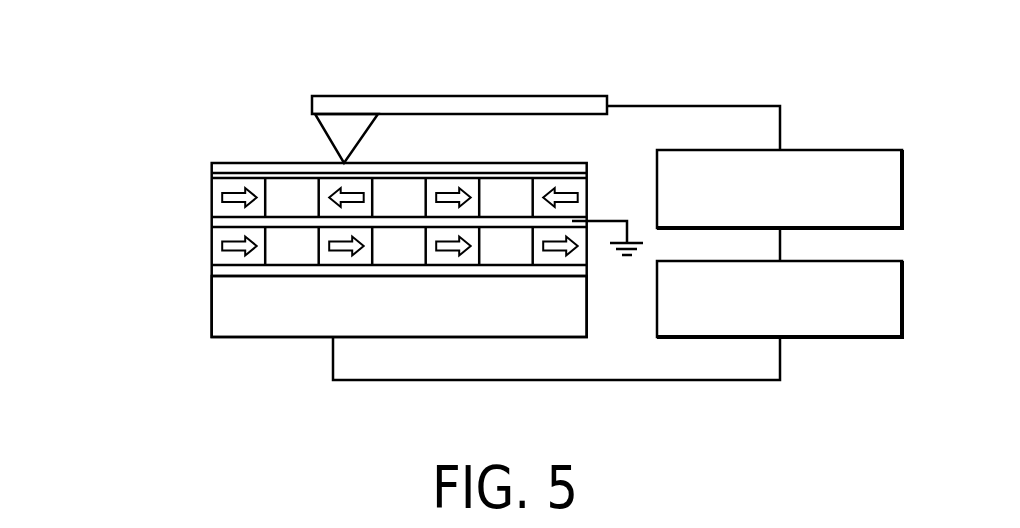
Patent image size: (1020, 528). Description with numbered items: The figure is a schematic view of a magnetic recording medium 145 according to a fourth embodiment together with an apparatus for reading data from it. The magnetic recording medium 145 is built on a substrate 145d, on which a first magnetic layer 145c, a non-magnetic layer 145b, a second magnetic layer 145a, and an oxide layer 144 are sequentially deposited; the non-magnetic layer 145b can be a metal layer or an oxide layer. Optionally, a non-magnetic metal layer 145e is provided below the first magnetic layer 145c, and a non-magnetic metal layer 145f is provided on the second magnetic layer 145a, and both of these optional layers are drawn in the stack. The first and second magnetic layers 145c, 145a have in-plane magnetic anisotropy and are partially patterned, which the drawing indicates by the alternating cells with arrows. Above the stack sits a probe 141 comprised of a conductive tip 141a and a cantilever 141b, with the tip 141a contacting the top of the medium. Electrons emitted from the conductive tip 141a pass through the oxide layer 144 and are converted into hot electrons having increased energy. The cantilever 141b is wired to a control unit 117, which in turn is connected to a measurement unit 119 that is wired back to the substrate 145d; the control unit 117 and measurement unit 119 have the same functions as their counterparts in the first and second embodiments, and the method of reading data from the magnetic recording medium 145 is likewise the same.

The probe 141 is at (288, 108).
The conductive tip 141a is at (354, 131).
The cantilever 141b is at (406, 107).
The oxide layer 144 is at (211, 172).
The magnetic recording medium 145 is at (97, 102).
The second magnetic layer 145a is at (211, 195).
The non-magnetic layer 145b is at (211, 223).
The first magnetic layer 145c is at (211, 243).
The substrate 145d is at (211, 292).
The non-magnetic metal layer 145e is at (211, 272).
The non-magnetic metal layer 145f is at (211, 177).
The control unit 117 is at (842, 150).
The measurement unit 119 is at (847, 337).